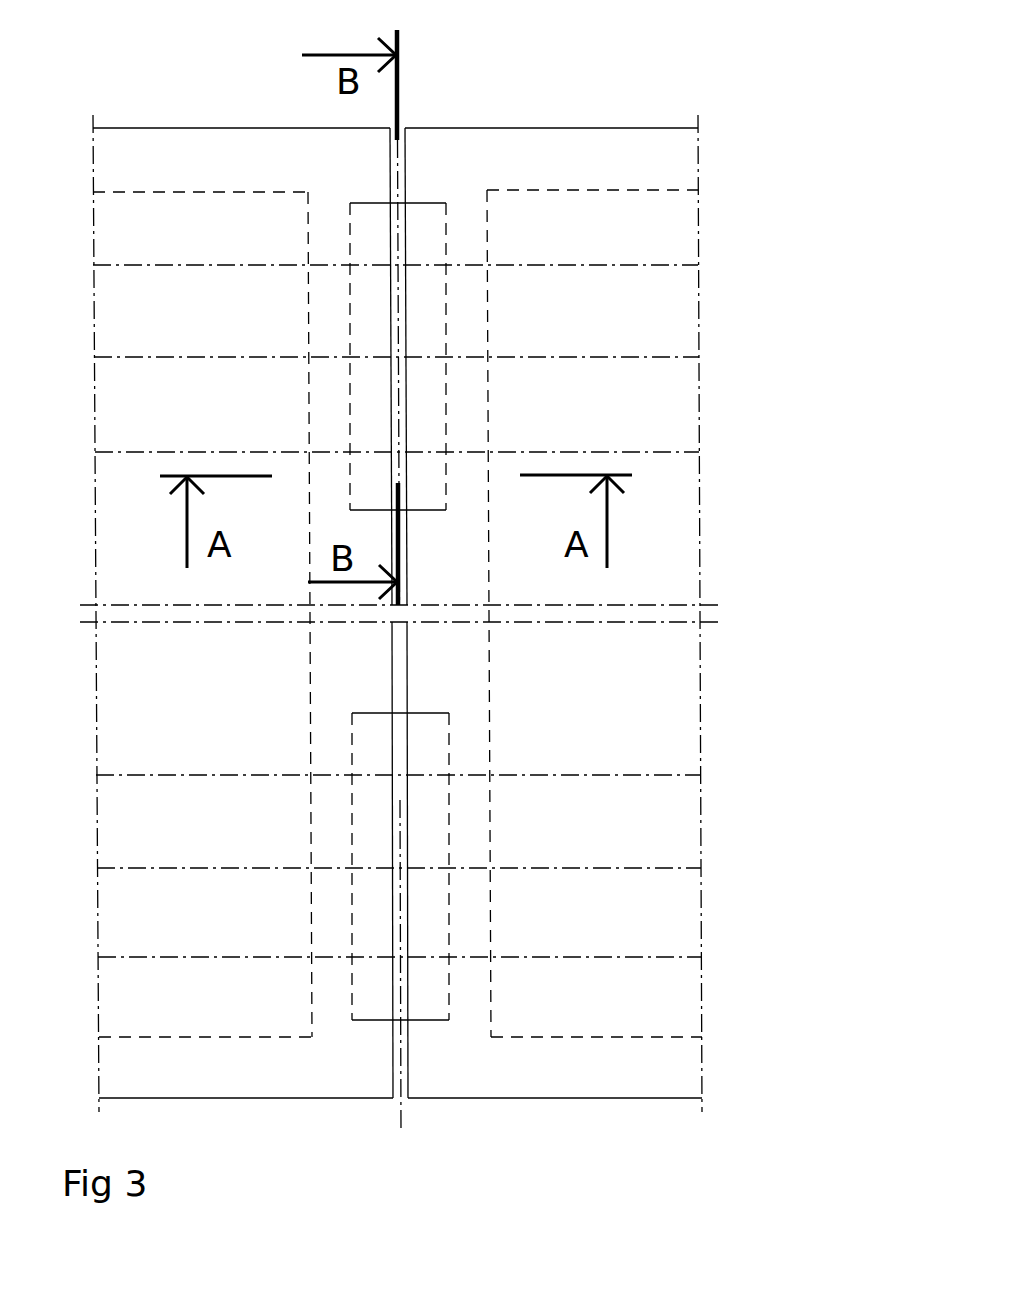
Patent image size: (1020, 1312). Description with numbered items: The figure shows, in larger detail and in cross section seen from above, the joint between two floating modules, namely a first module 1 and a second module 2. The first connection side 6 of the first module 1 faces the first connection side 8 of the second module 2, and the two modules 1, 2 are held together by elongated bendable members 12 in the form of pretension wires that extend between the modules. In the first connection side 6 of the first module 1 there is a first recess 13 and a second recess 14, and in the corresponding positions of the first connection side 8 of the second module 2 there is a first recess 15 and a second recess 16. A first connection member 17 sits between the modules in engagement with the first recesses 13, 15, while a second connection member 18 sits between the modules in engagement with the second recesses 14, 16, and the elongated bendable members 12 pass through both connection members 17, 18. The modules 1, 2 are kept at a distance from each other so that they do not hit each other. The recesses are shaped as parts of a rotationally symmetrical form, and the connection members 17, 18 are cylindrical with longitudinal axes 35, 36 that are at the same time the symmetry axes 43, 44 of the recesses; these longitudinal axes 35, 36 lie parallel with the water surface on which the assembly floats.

The first module 1 is at (224, 676).
The second module 2 is at (576, 680).
The first connection side of the first module 6 is at (392, 673).
The first connection side of the second module 8 is at (408, 685).
The elongated bendable members 12 is at (683, 450).
The first recess 13 is at (352, 323).
The second recess 14 is at (350, 833).
The first recess 15 is at (442, 335).
The second recess 16 is at (443, 833).
The first connection member 17 is at (423, 230).
The second connection member 18 is at (368, 907).
The longitudinal axis 35 is at (397, 180).
The longitudinal axis 36 is at (401, 1112).
The symmetry axis 43 is at (398, 180).
The symmetry axis 44 is at (401, 1112).